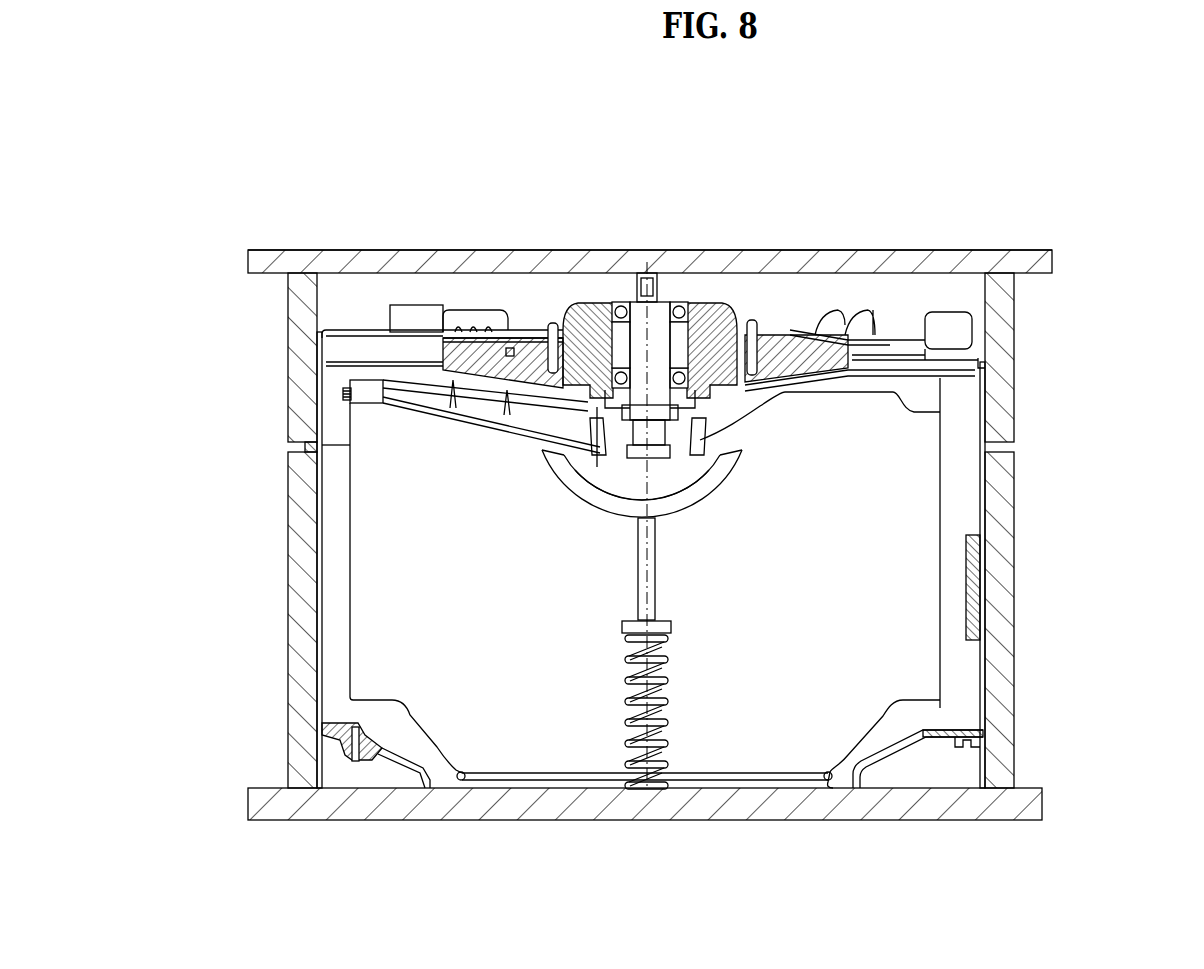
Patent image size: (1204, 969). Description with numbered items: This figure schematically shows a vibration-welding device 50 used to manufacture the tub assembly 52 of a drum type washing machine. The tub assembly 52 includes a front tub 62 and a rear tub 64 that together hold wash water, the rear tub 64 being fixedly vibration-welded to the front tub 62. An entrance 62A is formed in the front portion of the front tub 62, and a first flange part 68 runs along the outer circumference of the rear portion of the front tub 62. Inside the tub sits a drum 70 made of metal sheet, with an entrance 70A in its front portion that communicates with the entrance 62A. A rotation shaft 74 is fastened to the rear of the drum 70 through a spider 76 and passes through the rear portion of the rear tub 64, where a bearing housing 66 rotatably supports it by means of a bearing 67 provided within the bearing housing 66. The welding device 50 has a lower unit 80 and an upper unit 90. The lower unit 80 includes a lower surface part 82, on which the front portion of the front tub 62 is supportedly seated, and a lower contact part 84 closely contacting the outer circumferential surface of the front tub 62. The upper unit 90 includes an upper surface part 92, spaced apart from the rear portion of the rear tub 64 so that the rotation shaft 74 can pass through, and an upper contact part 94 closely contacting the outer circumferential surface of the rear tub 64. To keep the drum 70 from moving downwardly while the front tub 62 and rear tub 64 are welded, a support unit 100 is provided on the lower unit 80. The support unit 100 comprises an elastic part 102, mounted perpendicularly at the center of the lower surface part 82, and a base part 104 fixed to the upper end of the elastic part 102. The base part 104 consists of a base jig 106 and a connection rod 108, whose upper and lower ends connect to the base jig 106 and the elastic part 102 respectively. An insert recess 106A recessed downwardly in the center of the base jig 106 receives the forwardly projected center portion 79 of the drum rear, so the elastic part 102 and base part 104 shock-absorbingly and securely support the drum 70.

The vibration-welding device 50 is at (265, 240).
The tub assembly 52 is at (522, 302).
The front tub 62 is at (249, 511).
The entrance 62A is at (452, 790).
The rear tub 64 is at (368, 332).
The bearing housing 66 is at (680, 300).
The bearing 67 is at (300, 437).
The first flange part 68 is at (292, 468).
The drum 70 is at (546, 627).
The entrance 70A is at (555, 776).
The rotation shaft 74 is at (640, 276).
The spider 76 is at (382, 380).
The center portion 79 is at (770, 425).
The lower unit 80 is at (726, 615).
The lower surface part 82 is at (950, 805).
The lower contact part 84 is at (1000, 712).
The upper unit 90 is at (715, 295).
The upper surface part 92 is at (948, 258).
The upper contact part 94 is at (1064, 357).
The support unit 100 is at (672, 742).
The elastic part 102 is at (662, 652).
The base part 104 is at (649, 619).
The base jig 106 is at (704, 490).
The insert recess 106A is at (612, 480).
The connection rod 108 is at (655, 580).